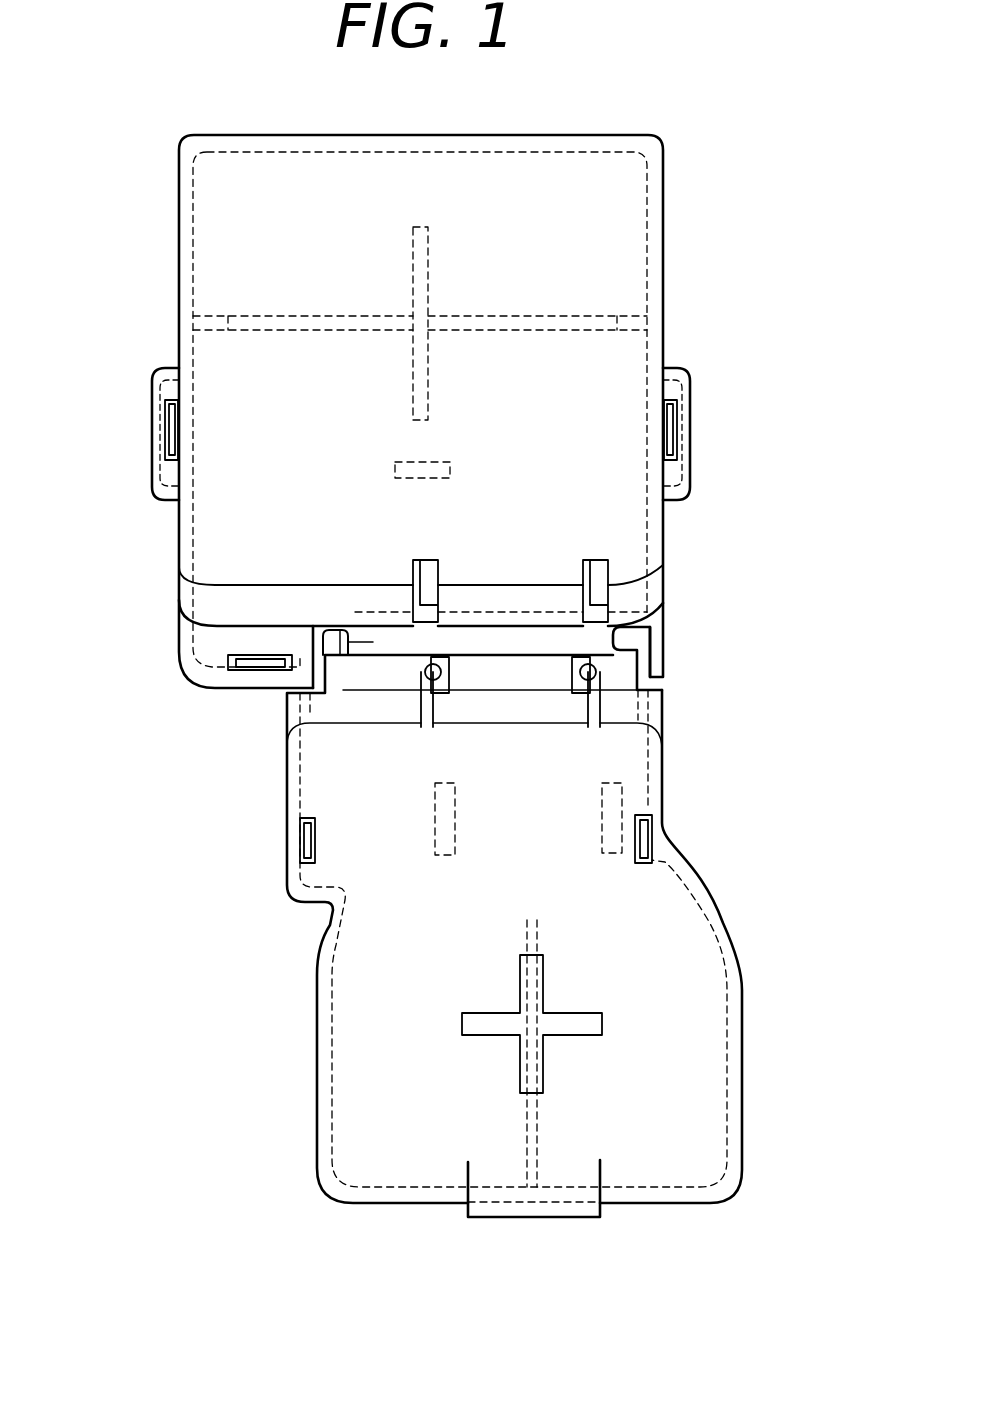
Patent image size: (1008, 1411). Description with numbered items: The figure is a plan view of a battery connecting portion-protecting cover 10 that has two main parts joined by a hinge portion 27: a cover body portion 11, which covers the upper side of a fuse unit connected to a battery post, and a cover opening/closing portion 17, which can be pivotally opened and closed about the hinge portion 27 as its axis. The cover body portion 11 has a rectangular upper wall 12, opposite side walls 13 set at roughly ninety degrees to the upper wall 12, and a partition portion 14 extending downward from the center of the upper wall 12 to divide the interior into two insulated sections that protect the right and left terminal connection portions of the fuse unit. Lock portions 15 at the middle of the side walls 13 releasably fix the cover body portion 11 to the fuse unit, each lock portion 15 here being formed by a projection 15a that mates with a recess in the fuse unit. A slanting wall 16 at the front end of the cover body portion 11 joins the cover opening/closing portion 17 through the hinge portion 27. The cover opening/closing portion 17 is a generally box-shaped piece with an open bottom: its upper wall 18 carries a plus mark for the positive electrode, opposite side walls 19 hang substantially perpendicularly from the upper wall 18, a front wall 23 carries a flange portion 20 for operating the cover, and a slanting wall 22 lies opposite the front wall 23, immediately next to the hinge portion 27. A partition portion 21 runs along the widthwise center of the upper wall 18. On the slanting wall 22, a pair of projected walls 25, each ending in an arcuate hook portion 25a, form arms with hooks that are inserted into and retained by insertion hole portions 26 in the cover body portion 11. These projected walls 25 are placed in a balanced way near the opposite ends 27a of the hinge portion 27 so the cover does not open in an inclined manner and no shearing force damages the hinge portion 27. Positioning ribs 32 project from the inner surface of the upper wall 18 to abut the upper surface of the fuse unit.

The protecting cover 10 is at (683, 151).
The cover body portion 11 is at (665, 212).
The upper wall 12 is at (220, 207).
The side walls 13 is at (180, 268).
The partition portion 14 is at (430, 285).
The lock portions 15 is at (152, 440).
The projection 15a is at (170, 415).
The slanting wall 16 is at (665, 584).
The cover opening/closing portion 17 is at (735, 936).
The upper wall 18 is at (335, 1023).
The side walls 19 is at (320, 1095).
The flange portion 20 is at (543, 1213).
The partition portion 21 is at (527, 1150).
The slanting wall 22 is at (625, 677).
The front wall 23 is at (660, 1202).
The projected walls 25 is at (417, 702).
The arcuate hook portion 25a is at (430, 672).
The insertion hole portions 26 is at (595, 575).
The hinge portion 27 is at (338, 645).
The opposite ends 27a is at (363, 635).
The positioning ribs 32 is at (455, 835).